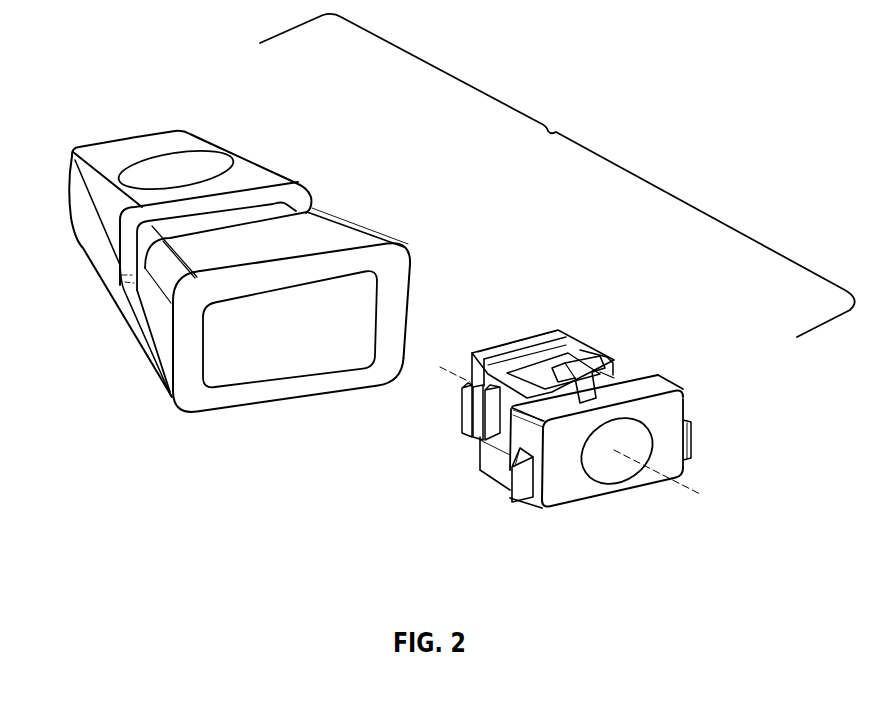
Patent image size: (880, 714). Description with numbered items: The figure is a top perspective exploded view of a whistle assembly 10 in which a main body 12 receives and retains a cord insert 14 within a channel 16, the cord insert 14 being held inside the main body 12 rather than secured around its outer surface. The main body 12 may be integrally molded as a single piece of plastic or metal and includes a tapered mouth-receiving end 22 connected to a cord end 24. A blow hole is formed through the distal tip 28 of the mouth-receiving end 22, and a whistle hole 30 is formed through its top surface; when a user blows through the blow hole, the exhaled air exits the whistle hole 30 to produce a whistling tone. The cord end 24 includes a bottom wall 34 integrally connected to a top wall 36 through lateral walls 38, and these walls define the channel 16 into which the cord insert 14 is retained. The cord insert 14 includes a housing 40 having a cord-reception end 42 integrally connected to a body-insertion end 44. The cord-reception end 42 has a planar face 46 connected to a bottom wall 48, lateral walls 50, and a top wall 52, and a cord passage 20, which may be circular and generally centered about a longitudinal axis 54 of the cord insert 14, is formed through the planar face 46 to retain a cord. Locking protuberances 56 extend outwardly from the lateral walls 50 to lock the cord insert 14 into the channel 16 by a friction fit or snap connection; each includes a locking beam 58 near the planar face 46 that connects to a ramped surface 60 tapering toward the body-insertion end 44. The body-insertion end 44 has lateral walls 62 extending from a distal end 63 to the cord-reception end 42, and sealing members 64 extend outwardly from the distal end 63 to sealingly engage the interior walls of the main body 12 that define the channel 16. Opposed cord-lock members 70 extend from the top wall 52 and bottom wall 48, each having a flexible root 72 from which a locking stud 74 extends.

The whistle assembly 10 is at (557, 175).
The main body 12 is at (168, 112).
The cord insert 14 is at (714, 389).
The channel 16 is at (255, 370).
The cord passage 20 is at (607, 462).
The mouth-receiving end 22 is at (80, 220).
The cord end 24 is at (363, 260).
The distal tip 28 is at (98, 138).
The whistle hole 30 is at (193, 167).
The bottom wall 34 is at (294, 402).
The top wall 36 is at (307, 233).
The lateral walls 38 is at (412, 300).
The housing 40 is at (684, 481).
The cord-reception end 42 is at (605, 492).
The body-insertion end 44 is at (565, 333).
The planar face 46 is at (563, 500).
The bottom wall 48 is at (634, 489).
The lateral walls 50 is at (689, 413).
The top wall 52 is at (640, 390).
The longitudinal axis 54 is at (696, 492).
The locking protuberances 56 is at (691, 447).
The locking beam 58 is at (512, 503).
The ramped surface 60 is at (522, 443).
The lateral walls 62 is at (625, 375).
The distal end 63 is at (542, 342).
The sealing members 64 is at (613, 360).
The cord-lock members 70 is at (603, 357).
The flexible root 72 is at (647, 380).
The locking stud 74 is at (590, 353).